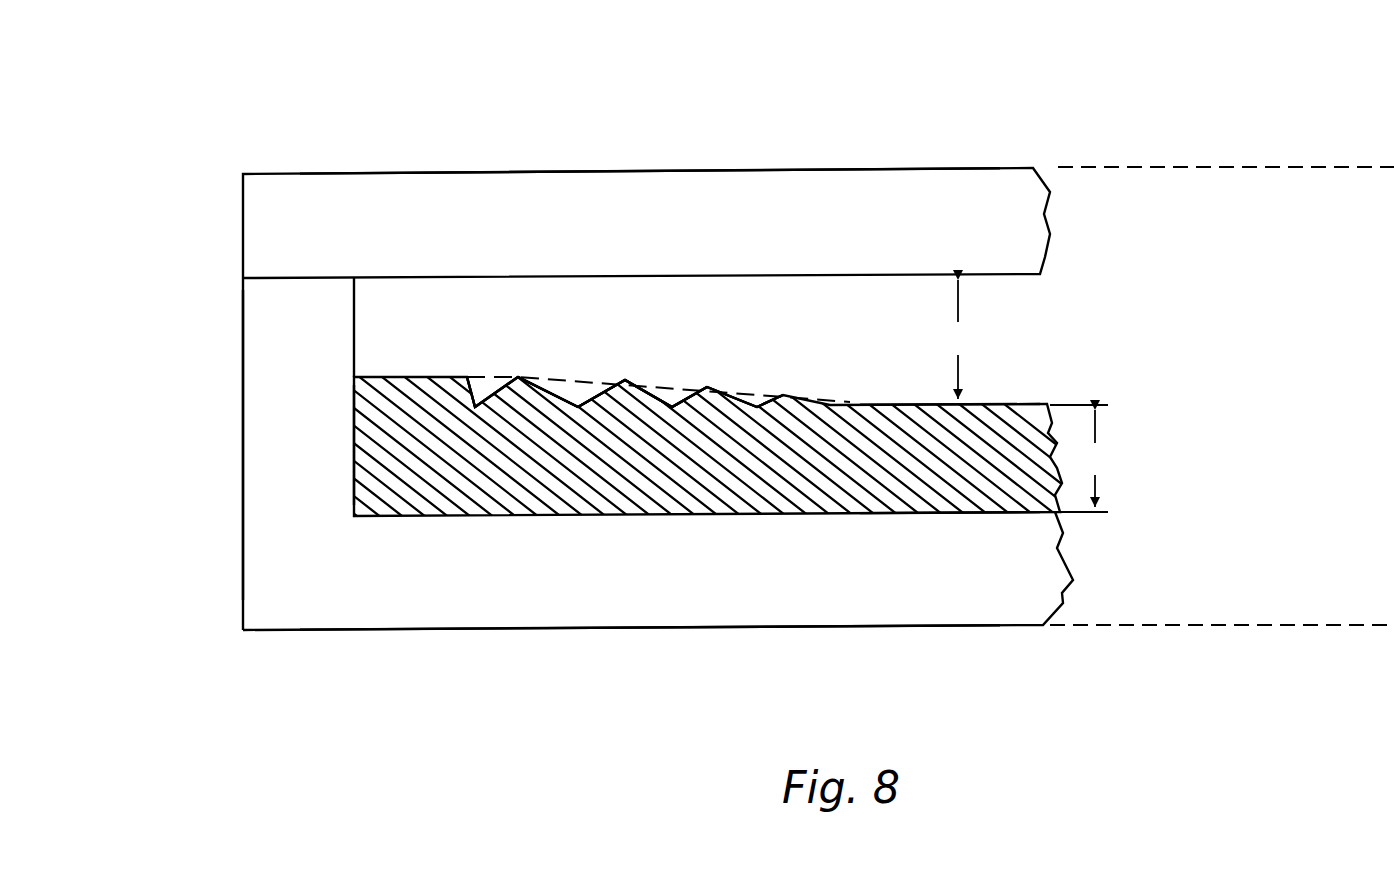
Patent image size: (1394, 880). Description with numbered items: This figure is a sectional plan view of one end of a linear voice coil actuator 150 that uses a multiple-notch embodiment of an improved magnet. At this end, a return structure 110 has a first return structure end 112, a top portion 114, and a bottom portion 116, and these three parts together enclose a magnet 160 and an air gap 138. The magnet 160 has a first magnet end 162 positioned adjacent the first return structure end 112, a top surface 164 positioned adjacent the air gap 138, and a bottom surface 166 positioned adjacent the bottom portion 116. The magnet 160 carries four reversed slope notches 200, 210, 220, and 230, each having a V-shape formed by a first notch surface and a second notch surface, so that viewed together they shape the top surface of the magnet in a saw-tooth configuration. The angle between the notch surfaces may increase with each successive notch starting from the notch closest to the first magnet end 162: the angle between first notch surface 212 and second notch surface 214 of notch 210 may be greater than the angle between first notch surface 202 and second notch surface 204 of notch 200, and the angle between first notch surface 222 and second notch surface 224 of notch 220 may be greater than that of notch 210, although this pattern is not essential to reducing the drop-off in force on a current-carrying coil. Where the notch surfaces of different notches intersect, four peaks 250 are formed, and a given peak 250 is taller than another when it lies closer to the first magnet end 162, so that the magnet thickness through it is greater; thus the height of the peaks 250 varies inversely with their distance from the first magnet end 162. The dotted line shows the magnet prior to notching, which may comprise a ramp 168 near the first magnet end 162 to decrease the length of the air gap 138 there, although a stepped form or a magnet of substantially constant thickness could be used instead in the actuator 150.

The linear voice coil actuator 150 is at (290, 95).
The return structure 110 is at (288, 184).
The first return structure end 112 is at (274, 359).
The top portion 114 is at (425, 174).
The bottom portion 116 is at (878, 627).
The air gap 138 is at (1007, 338).
The magnet 160 is at (407, 496).
The first magnet end 162 is at (353, 473).
The top surface 164 is at (1020, 404).
The bottom surface 166 is at (997, 513).
The ramp 168 is at (813, 401).
The reversed slope notch 200 is at (482, 386).
The first notch surface 202 is at (468, 404).
The second notch surface 204 is at (500, 392).
The reversed slope notch 210 is at (577, 395).
The first notch surface 212 is at (552, 379).
The second notch surface 214 is at (594, 384).
The reversed slope notch 220 is at (670, 398).
The first notch surface 222 is at (645, 385).
The second notch surface 224 is at (684, 390).
The reversed slope notch 230 is at (741, 389).
The peaks 250 is at (781, 398).